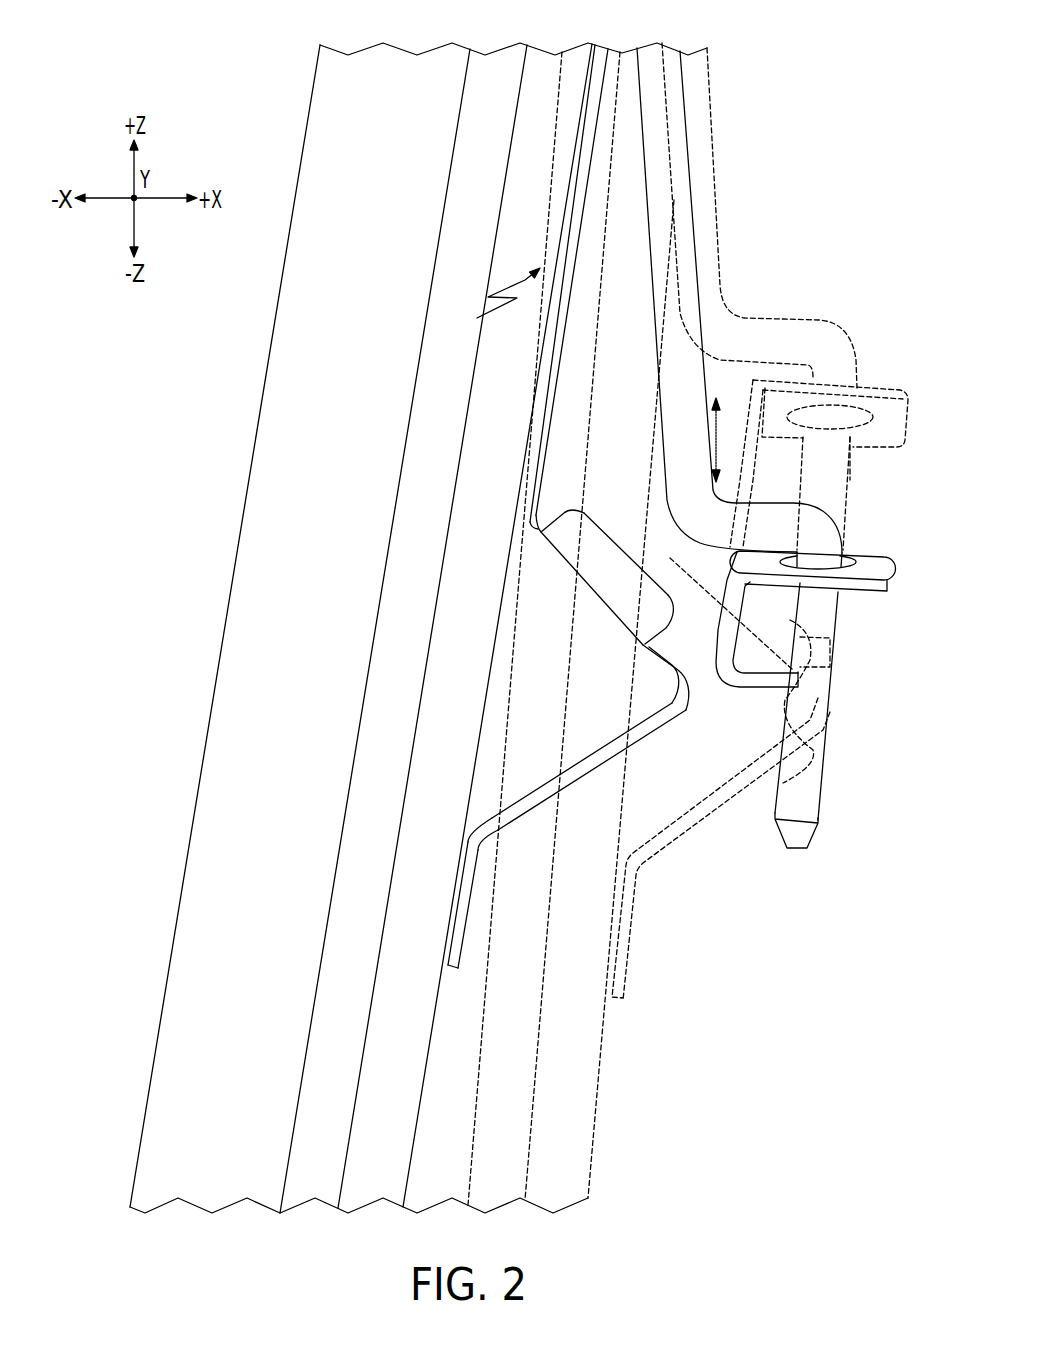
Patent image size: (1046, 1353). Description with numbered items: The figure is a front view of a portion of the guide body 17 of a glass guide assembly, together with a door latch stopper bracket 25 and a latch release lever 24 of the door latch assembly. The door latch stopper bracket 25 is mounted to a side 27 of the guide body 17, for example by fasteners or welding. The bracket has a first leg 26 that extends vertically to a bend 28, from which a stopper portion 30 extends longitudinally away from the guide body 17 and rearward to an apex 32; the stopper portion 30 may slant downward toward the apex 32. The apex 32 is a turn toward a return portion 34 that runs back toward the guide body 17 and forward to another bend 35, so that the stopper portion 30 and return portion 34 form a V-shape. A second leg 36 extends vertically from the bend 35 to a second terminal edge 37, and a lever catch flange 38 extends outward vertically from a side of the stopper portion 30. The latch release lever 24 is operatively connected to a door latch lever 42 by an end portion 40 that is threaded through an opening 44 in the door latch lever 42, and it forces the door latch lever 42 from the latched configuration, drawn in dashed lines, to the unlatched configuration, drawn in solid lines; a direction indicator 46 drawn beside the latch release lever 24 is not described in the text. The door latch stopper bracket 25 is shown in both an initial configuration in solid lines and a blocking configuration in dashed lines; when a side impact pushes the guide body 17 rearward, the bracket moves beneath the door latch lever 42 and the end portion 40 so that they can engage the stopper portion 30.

The guide body 17 is at (238, 547).
The latch release lever 24 is at (680, 170).
The door latch stopper bracket 25 is at (491, 305).
The first leg 26 is at (602, 55).
The side 27 is at (475, 748).
The bend 28 is at (524, 527).
The stopper portion 30 is at (650, 648).
The apex 32 is at (684, 695).
The return portion 34 is at (580, 773).
The bend 35 is at (475, 847).
The second leg 36 is at (460, 937).
The second terminal edge 37 is at (447, 967).
The lever catch flange 38 is at (597, 540).
The end portion 40 is at (813, 755).
The door latch lever 42 is at (887, 582).
The opening 44 is at (870, 563).
The adjustment direction 46 is at (707, 443).